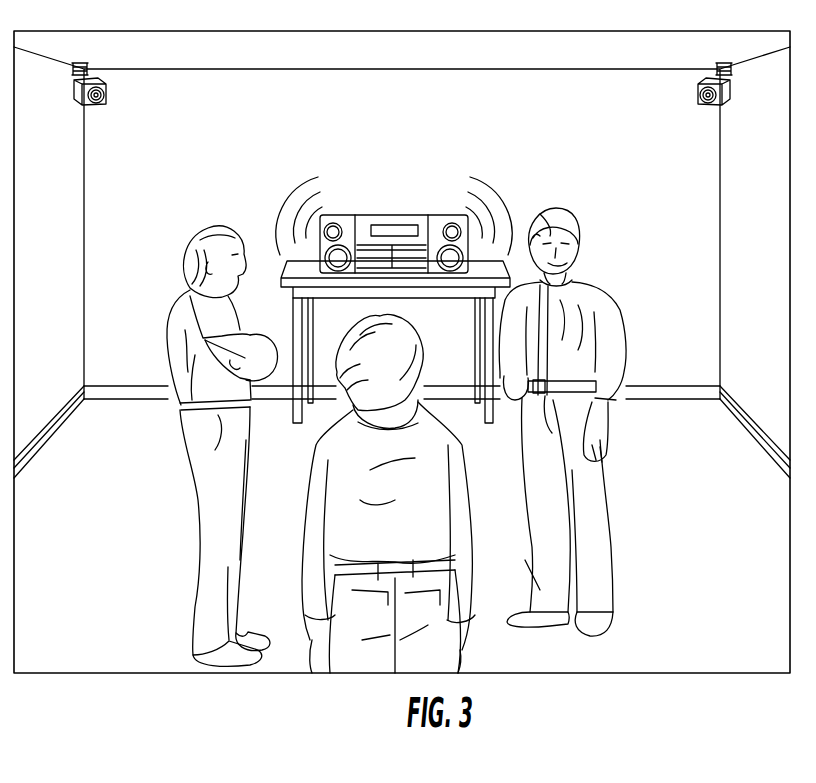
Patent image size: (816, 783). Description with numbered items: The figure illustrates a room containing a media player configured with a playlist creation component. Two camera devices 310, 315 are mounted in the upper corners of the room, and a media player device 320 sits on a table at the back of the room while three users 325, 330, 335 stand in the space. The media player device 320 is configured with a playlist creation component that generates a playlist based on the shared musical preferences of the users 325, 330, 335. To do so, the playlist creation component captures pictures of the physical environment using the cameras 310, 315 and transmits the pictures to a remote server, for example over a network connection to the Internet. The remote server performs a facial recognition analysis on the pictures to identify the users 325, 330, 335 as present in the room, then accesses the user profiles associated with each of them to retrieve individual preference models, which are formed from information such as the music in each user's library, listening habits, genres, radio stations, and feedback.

The camera device 310 is at (96, 104).
The camera device 315 is at (708, 104).
The media player device 320 is at (390, 215).
The user 325 is at (168, 260).
The user 330 is at (306, 527).
The user 335 is at (628, 318).